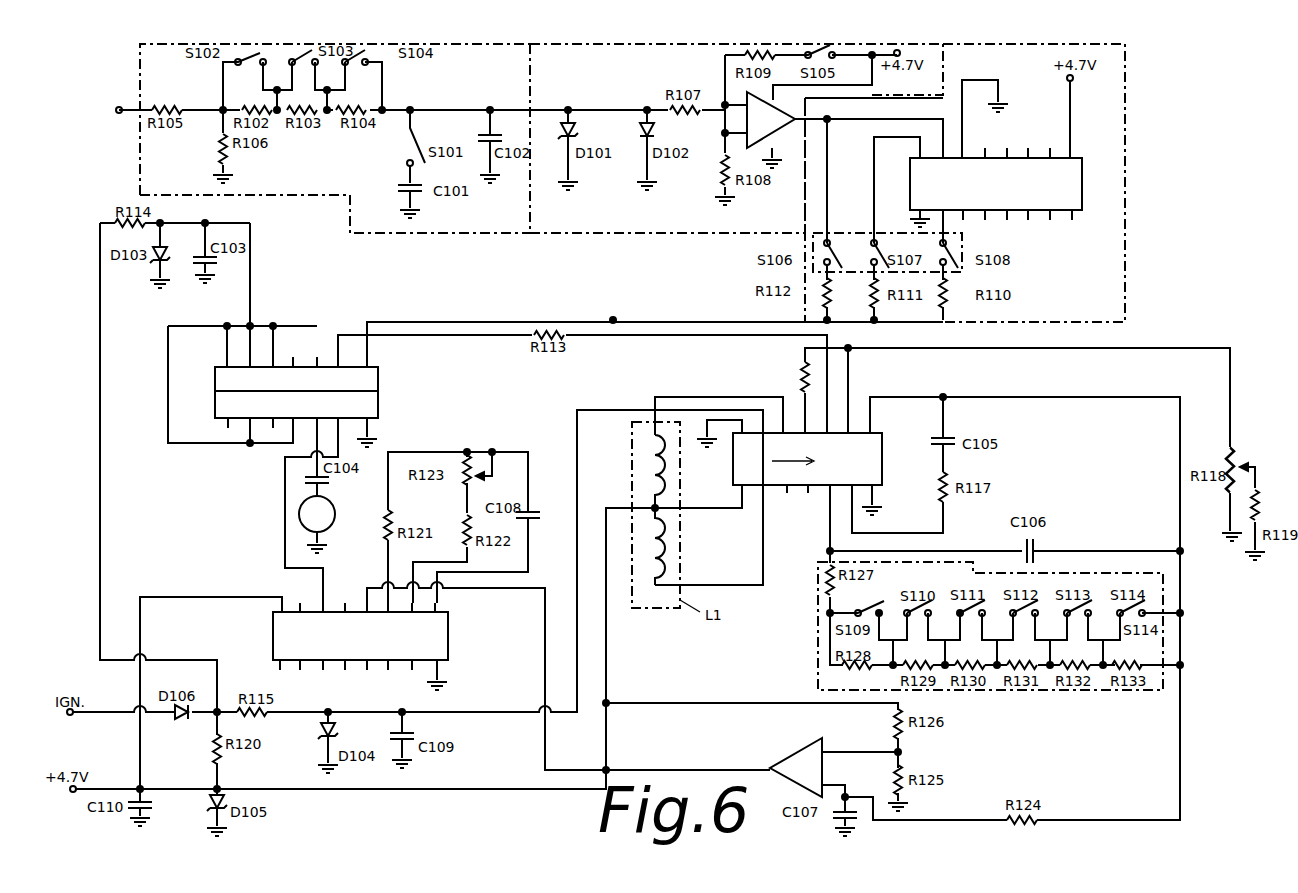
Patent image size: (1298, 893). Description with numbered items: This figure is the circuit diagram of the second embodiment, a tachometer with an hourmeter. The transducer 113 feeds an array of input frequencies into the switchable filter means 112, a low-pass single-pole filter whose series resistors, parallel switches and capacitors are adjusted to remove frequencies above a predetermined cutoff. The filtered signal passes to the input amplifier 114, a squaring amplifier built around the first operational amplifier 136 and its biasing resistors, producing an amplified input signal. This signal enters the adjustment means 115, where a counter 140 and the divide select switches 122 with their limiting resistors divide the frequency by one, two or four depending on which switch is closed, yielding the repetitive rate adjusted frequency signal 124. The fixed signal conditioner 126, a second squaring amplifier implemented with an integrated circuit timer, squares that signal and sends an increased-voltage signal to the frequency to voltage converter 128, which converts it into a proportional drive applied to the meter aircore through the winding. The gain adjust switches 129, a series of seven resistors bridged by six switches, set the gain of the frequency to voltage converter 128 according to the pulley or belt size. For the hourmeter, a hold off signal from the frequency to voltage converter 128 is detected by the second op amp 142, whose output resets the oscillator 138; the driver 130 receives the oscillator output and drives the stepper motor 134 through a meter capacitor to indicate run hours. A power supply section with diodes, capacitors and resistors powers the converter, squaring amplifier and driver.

The transducer 113 is at (118, 107).
The switchable filter means 112 is at (372, 233).
The input amplifier 114 is at (568, 235).
The adjustment means 115 is at (1125, 68).
The divide select switches 122 is at (962, 240).
The repetitive rate adjusted frequency signal 124 is at (613, 322).
The fixed signal conditioner 126 is at (380, 377).
The frequency to voltage converter 128 is at (868, 458).
The gain adjust switches 129 is at (1163, 690).
The driver 130 is at (380, 407).
The stepper motor 134 is at (328, 528).
The first operational amplifier 136 is at (783, 128).
The oscillator 138 is at (278, 638).
The counter 140 is at (1082, 185).
The second op amp 142 is at (793, 760).